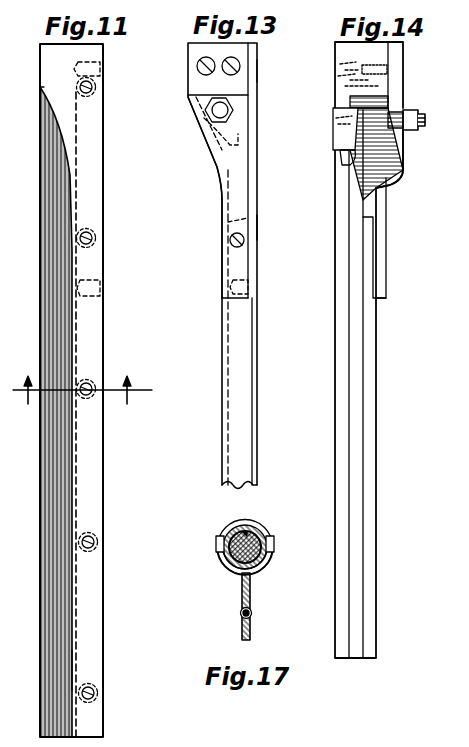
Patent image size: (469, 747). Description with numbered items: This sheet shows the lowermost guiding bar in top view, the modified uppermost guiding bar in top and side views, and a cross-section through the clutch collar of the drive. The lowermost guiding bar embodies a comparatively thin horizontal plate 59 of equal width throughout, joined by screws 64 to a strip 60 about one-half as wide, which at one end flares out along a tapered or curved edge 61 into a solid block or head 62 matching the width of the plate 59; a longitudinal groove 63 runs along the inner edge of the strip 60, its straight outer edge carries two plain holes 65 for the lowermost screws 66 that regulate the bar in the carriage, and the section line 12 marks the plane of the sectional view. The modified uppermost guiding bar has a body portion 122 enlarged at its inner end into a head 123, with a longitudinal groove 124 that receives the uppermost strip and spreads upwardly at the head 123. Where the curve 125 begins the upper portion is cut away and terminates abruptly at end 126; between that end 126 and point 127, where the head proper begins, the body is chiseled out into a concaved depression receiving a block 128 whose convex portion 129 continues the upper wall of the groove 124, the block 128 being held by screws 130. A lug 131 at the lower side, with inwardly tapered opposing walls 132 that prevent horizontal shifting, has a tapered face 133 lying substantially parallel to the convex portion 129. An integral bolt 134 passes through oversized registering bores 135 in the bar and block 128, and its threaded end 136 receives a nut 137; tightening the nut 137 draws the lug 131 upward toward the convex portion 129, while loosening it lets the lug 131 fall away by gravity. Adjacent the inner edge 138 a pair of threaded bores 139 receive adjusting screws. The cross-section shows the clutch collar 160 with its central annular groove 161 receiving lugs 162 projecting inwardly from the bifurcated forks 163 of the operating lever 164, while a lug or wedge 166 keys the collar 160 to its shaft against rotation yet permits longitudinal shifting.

In FIG. 11, the section line 12— 12 is at (82, 380).
In FIG. 11, the horizontal plate 59 is at (48, 511).
In FIG. 11, the strip 60 is at (95, 513).
In FIG. 11, the tapered or curved edge 61 is at (68, 170).
In FIG. 11, the solid block or head 62 is at (50, 78).
In FIG. 11, the groove 63 is at (72, 671).
In FIG. 11, the screws 64 is at (96, 96).
In FIG. 11, the plain holes 65 is at (103, 70).
In FIG. 11, the lowermost screws 66 is at (104, 289).
In FIG. 13, the body portion 122 is at (252, 437).
In FIG. 13, the head 123 is at (262, 135).
In FIG. 14, the head 123 is at (348, 80).
In FIG. 14, the groove 124 is at (362, 458).
In FIG. 13, the curve 125 is at (216, 180).
In FIG. 13, the end of upper portion 126 is at (226, 222).
In FIG. 14, the end of upper portion 126 is at (374, 220).
In FIG. 13, the point where head begins 127 is at (200, 110).
In FIG. 14, the block 128 is at (384, 196).
In FIG. 14, the convex portion 129 is at (362, 172).
In FIG. 13, the screws 130 is at (206, 66).
In FIG. 13, the lug 131 is at (250, 120).
In FIG. 14, the lug 131 is at (336, 130).
In FIG. 13, the opposing walls 132 is at (216, 150).
In FIG. 14, the face 133 is at (342, 158).
In FIG. 14, the bolt 134 is at (424, 126).
In FIG. 14, the registering bores 135 is at (388, 100).
In FIG. 14, the threaded end 136 is at (413, 110).
In FIG. 14, the nut 137 is at (400, 130).
In FIG. 13, the inner edge 138 is at (258, 232).
In FIG. 13, the threaded bores 139 is at (258, 74).
In FIG. 17, the clutch collar 160 is at (236, 528).
In FIG. 17, the annular groove 161 is at (258, 538).
In FIG. 17, the lugs 162 is at (220, 536).
In FIG. 17, the bifurcated ends or forks 163 is at (264, 567).
In FIG. 17, the operating lever 164 is at (242, 600).
In FIG. 17, the lug or wedge 166 is at (250, 532).